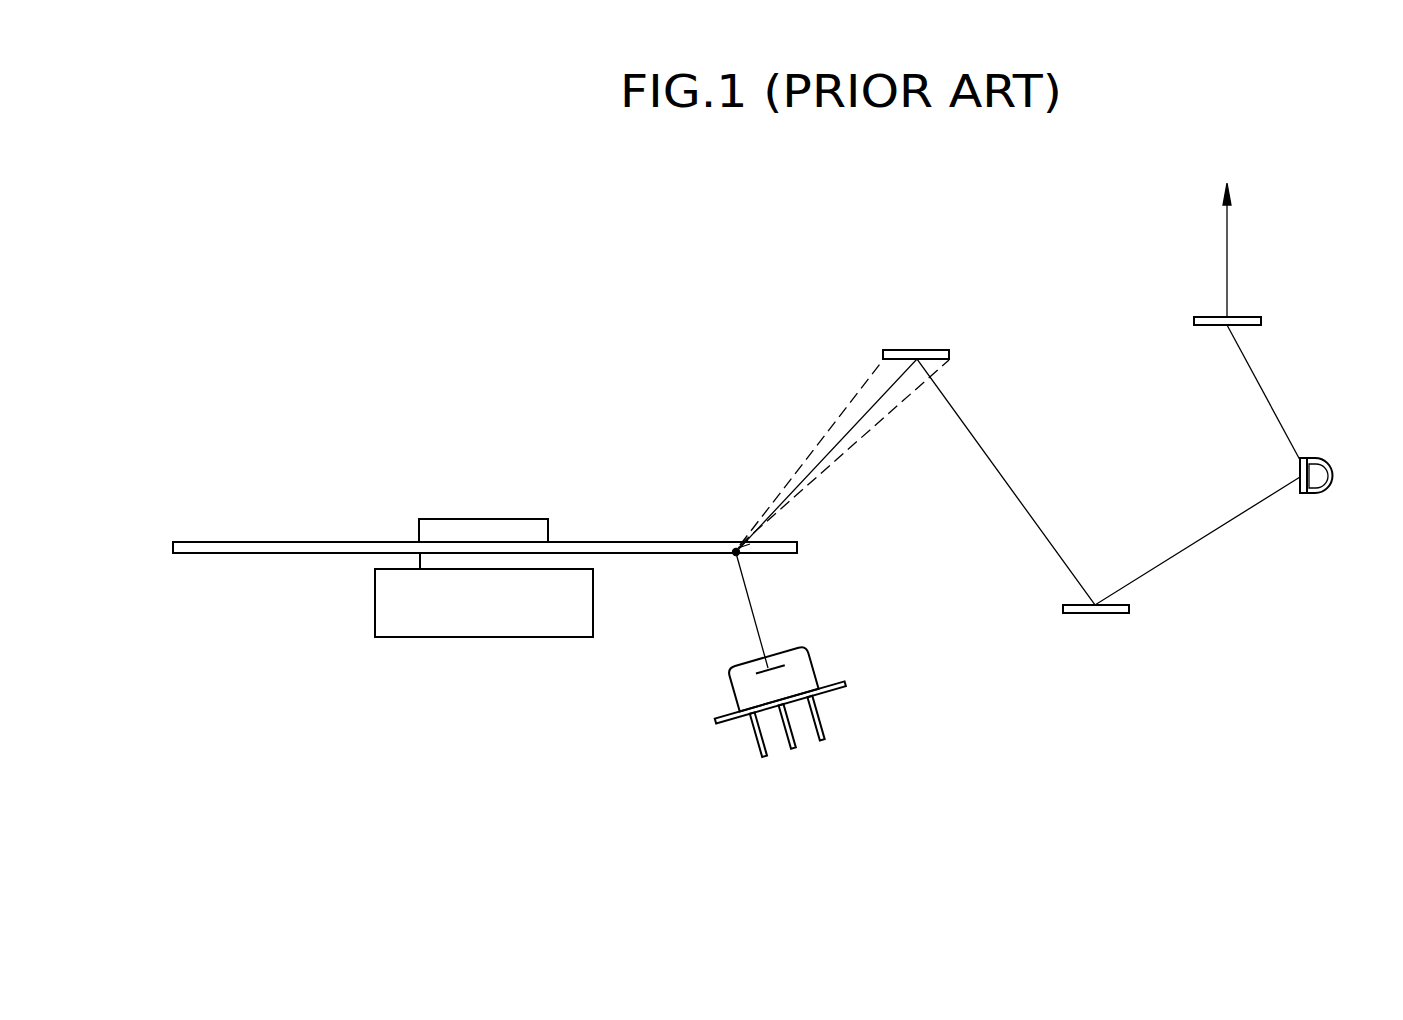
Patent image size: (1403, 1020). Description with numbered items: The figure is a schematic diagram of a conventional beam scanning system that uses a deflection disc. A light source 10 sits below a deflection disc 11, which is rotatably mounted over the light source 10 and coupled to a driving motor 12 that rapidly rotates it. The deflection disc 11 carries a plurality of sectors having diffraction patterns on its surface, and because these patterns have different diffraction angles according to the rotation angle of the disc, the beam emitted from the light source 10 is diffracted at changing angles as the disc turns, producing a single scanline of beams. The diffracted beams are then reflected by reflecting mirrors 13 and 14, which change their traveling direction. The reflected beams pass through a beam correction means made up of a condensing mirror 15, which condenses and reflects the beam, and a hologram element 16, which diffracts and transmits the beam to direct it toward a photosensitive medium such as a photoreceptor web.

The light source 10 is at (810, 666).
The deflection disc 11 is at (303, 541).
The driving motor 12 is at (465, 626).
The reflecting mirror 13 is at (920, 349).
The reflecting mirror 14 is at (1095, 614).
The condensing mirror 15 is at (1307, 495).
The hologram element 16 is at (1194, 321).